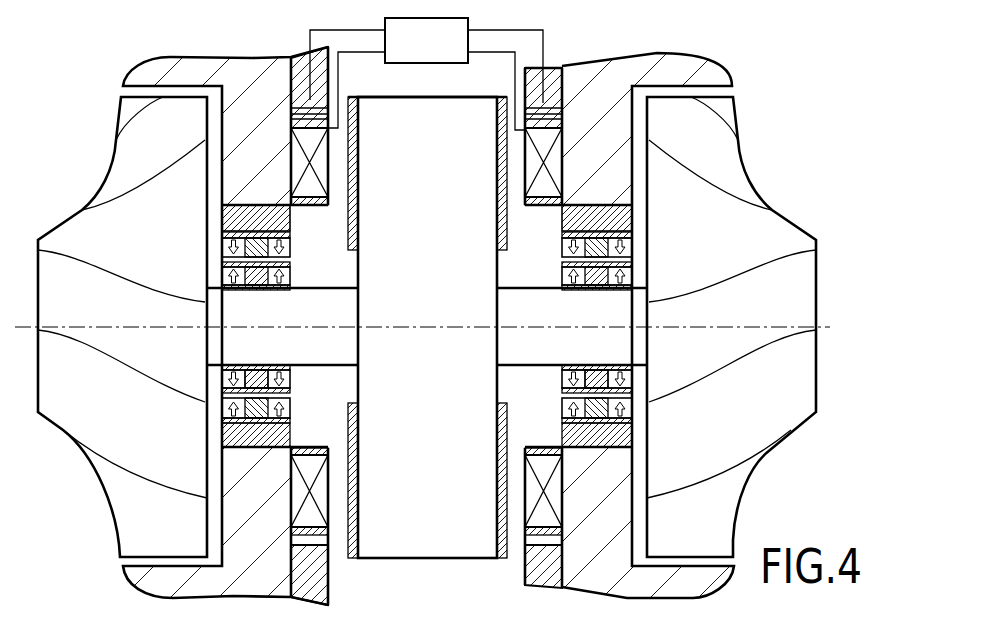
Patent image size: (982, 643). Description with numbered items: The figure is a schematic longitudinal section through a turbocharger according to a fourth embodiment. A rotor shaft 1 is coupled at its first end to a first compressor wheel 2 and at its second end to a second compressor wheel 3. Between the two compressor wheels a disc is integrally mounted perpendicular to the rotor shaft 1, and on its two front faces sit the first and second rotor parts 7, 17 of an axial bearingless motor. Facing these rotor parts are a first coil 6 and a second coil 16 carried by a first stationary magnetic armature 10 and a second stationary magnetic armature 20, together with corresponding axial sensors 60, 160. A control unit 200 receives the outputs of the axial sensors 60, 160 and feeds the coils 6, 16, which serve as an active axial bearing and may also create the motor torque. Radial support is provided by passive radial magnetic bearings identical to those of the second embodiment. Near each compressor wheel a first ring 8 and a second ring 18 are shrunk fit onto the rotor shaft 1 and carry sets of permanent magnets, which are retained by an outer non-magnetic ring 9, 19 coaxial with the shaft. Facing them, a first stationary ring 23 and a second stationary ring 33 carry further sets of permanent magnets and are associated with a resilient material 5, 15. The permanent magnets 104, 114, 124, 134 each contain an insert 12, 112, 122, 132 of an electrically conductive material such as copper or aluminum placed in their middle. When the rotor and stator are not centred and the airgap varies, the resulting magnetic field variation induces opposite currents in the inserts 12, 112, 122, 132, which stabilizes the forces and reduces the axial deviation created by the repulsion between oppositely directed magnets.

The rotor shaft 1 is at (508, 337).
The first compressor wheel 2 is at (770, 309).
The second compressor wheel 3 is at (70, 309).
The resilient material 5 is at (600, 207).
The first coil 6 is at (534, 163).
The first rotor part 7 is at (497, 130).
The first ring 8 is at (562, 286).
The outer non-magnetic ring 9 is at (562, 392).
The first stationary magnetic armature 10 is at (533, 568).
The insert of electrically conductive material 12 is at (597, 373).
The resilient material 15 is at (255, 207).
The second coil 16 is at (320, 168).
The second rotor part 17 is at (358, 130).
The second ring 18 is at (292, 286).
The outer non-magnetic ring 19 is at (292, 389).
The second stationary magnetic armature 20 is at (320, 583).
The first stationary ring 23 is at (562, 233).
The second stationary ring 33 is at (292, 233).
The axial sensor 60 is at (562, 108).
The permanent magnet 104 is at (632, 277).
The insert of electrically conductive material 112 is at (255, 373).
The permanent magnet 114 is at (222, 277).
The insert of electrically conductive material 122 is at (600, 417).
The permanent magnet 124 is at (632, 247).
The insert of electrically conductive material 132 is at (258, 417).
The permanent magnet 134 is at (222, 248).
The axial sensor 160 is at (291, 110).
The control unit 200 is at (410, 54).